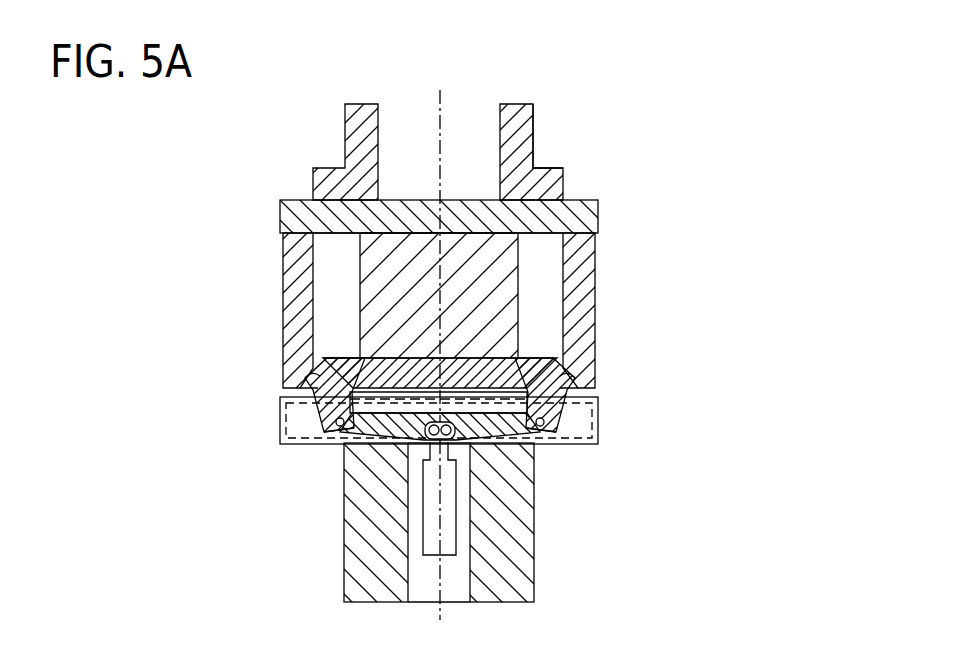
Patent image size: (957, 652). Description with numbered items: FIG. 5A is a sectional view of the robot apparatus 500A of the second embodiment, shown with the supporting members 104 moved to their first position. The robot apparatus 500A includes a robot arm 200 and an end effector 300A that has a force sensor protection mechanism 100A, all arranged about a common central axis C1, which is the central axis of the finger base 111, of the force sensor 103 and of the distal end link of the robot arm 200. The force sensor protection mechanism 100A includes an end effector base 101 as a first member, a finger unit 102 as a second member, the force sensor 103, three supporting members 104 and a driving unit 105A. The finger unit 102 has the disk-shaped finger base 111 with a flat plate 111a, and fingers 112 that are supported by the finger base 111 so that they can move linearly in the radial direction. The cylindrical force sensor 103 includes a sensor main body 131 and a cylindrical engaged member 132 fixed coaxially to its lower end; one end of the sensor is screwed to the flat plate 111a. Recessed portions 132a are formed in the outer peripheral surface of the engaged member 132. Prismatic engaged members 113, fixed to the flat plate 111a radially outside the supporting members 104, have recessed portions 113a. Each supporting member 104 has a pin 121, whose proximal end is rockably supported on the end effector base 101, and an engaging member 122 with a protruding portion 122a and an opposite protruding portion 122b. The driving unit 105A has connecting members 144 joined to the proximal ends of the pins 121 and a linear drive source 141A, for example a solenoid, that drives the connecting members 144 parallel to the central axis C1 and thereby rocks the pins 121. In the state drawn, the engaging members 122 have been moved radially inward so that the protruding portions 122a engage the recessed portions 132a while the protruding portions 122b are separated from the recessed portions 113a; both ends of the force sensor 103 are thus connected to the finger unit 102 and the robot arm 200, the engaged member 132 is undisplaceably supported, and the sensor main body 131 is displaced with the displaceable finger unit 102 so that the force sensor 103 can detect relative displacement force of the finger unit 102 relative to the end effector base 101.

The robot apparatus 500A is at (465, 106).
The central axis C1 is at (438, 97).
The end effector 300A is at (296, 195).
The finger 112 is at (355, 107).
The finger unit 102 is at (540, 148).
The force sensor protection mechanism 100A is at (599, 340).
The finger base 111 is at (598, 200).
The flat plate 111a is at (592, 245).
The engaged member 113 is at (585, 290).
The recessed portion 113a is at (318, 391).
The end effector base 101 is at (598, 420).
The force sensor 103 is at (190, 228).
The sensor main body 131 is at (368, 275).
The engaged member 132 is at (383, 362).
The recessed portion 132a is at (330, 358).
The supporting member 104 is at (722, 355).
The engaging member 122 is at (560, 372).
The protruding portion 122b is at (305, 365).
The protruding portion 122a is at (327, 405).
The pin 121 is at (565, 394).
The driving unit 105A is at (272, 470).
The connecting member 144 is at (372, 430).
The linear drive source 141A is at (430, 486).
The robot arm 200 is at (525, 532).